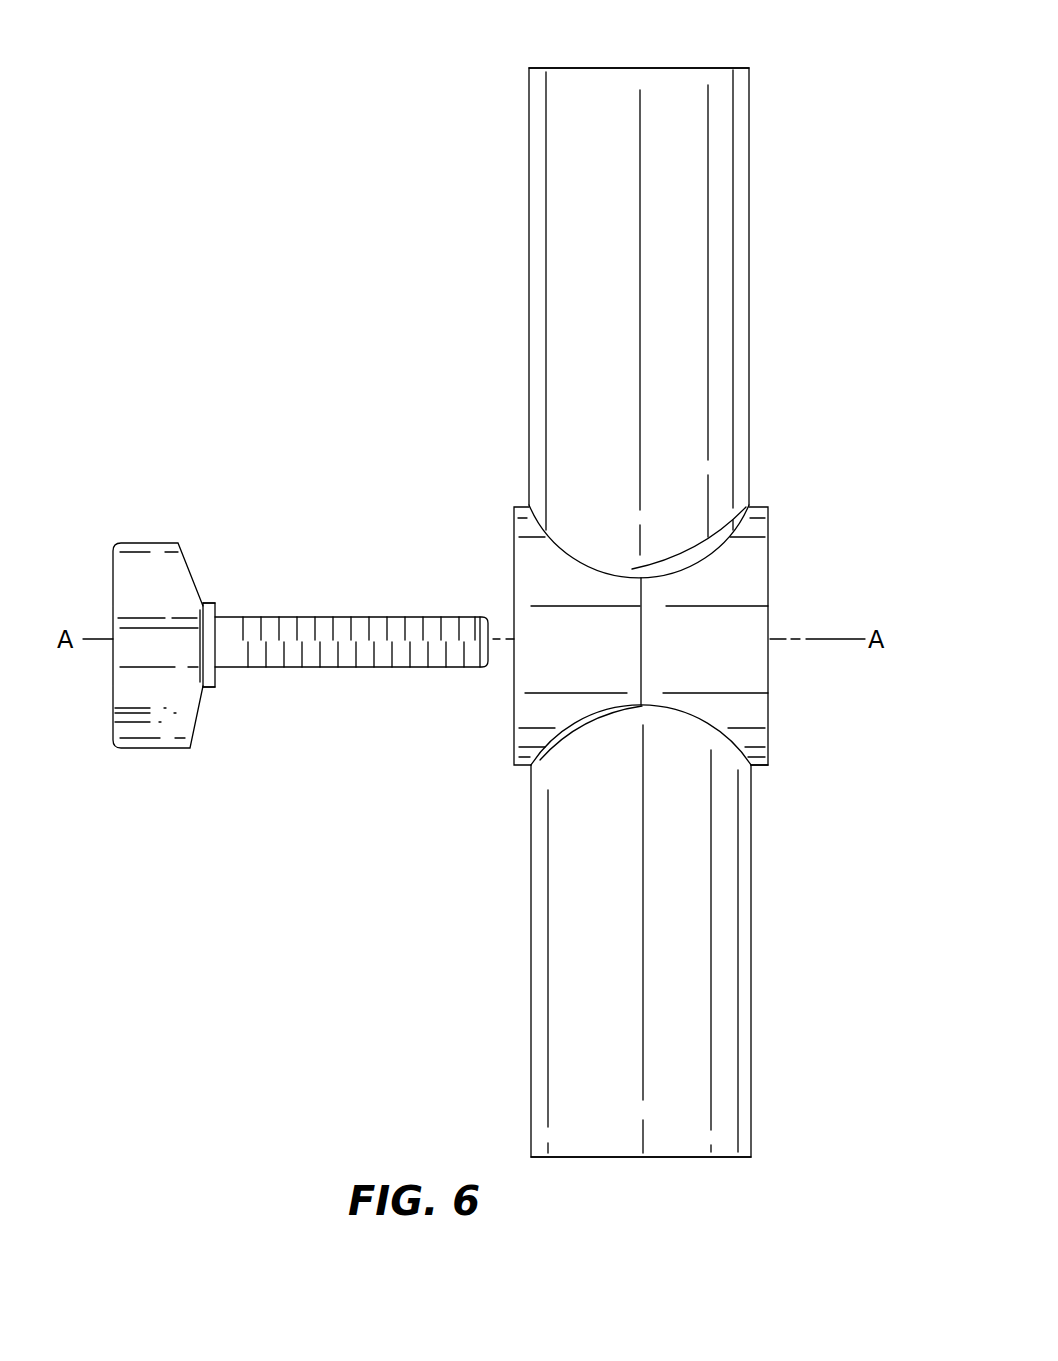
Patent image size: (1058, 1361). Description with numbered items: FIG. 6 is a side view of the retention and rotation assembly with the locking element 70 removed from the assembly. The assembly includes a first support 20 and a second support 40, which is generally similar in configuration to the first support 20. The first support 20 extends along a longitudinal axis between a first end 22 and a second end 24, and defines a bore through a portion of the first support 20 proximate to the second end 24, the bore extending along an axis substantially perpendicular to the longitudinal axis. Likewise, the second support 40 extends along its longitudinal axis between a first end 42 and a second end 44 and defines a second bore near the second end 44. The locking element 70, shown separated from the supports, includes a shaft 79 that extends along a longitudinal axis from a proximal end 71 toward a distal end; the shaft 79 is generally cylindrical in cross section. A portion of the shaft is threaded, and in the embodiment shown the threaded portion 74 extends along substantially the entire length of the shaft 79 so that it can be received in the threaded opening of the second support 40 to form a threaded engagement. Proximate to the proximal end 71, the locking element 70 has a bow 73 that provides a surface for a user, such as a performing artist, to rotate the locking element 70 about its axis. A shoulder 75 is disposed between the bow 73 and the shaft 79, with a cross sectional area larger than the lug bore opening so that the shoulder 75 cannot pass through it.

The first support 20 is at (545, 828).
The first end 22 is at (660, 1157).
The second end 24 is at (518, 507).
The second support 40 is at (728, 322).
The first end 42 is at (615, 68).
The second end 44 is at (760, 768).
The locking element 70 is at (271, 618).
The proximal end 71 is at (215, 606).
The bow 73 is at (137, 612).
The threaded portion 74 is at (448, 626).
The shoulder 75 is at (213, 688).
The shaft 79 is at (277, 652).